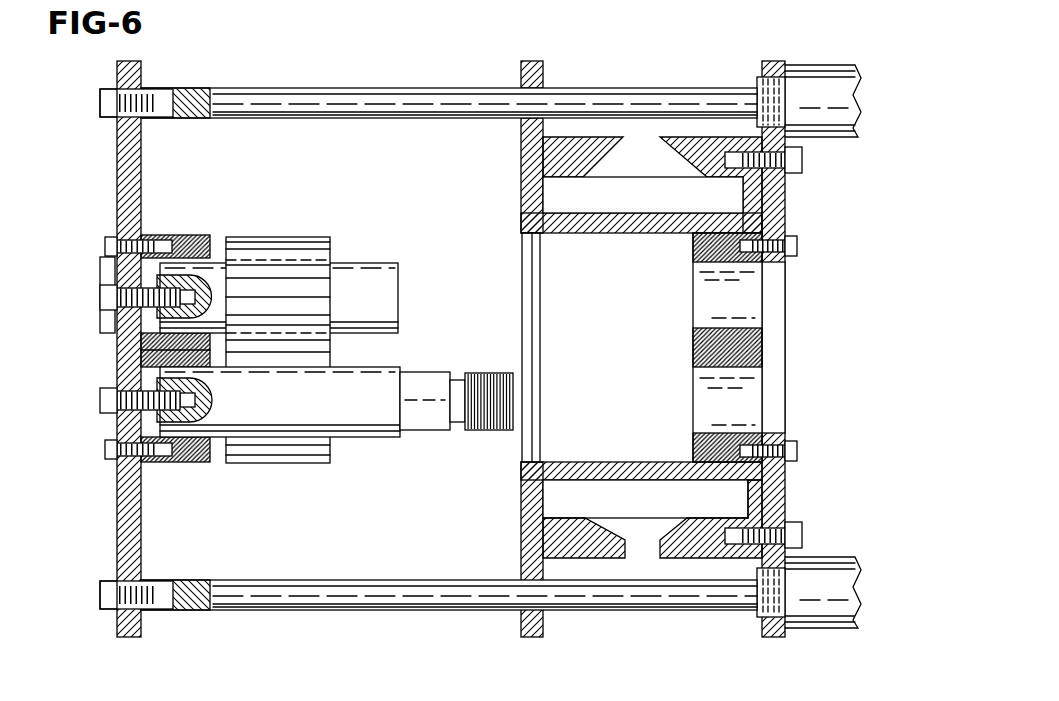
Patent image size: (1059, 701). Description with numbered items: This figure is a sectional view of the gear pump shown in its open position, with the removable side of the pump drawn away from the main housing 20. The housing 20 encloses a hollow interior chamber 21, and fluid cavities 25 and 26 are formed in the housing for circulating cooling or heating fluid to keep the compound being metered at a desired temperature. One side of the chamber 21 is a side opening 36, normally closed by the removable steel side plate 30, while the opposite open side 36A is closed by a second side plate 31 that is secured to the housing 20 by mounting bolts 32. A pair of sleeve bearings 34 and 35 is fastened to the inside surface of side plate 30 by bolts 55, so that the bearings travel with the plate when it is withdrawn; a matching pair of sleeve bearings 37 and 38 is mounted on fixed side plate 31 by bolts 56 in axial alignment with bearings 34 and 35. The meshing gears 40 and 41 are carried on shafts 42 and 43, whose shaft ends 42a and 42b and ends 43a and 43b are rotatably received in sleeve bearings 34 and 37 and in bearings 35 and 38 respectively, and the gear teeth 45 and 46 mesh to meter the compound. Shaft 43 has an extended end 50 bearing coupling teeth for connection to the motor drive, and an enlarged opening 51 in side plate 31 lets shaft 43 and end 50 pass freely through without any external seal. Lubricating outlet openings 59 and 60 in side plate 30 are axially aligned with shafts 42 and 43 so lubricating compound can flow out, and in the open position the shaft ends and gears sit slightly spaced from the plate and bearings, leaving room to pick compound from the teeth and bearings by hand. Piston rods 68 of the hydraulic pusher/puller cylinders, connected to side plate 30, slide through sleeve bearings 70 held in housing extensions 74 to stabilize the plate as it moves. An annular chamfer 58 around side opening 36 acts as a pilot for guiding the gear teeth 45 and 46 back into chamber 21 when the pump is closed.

The main housing 20 is at (500, 545).
The chamber 21 is at (598, 347).
The fluid cavity 25 is at (567, 193).
The fluid cavity 26 is at (577, 498).
The side plate 30 is at (123, 140).
The second side plate 31 is at (765, 70).
The mounting bolt 32 is at (797, 157).
The sleeve bearing 34 is at (210, 236).
The sleeve bearing 35 is at (177, 460).
The side opening 36 is at (548, 265).
The opposite open side 36A is at (742, 240).
The sleeve bearing 37 is at (700, 257).
The sleeve bearing 38 is at (693, 349).
The meshing gear 40 is at (276, 314).
The meshing gear 41 is at (306, 430).
The shaft 42 is at (356, 246).
The shaft end 42a is at (171, 262).
The shaft end 42b is at (380, 298).
The shaft 43 is at (360, 443).
The shaft end 43a is at (201, 458).
The shaft end 43b is at (372, 396).
The gear teeth 45 is at (258, 246).
The gear teeth 46 is at (263, 463).
The extended end 50 is at (488, 412).
The enlarged opening 51 is at (773, 435).
The bolt 55 is at (107, 243).
The bolt 56 is at (790, 253).
The annular chamfer 58 is at (533, 233).
The lubricating outlet opening 59 is at (133, 332).
The lubricating outlet opening 60 is at (133, 368).
The piston rod 68 is at (355, 100).
The sleeve bearing 70 is at (540, 87).
The housing extension 74 is at (273, 0).